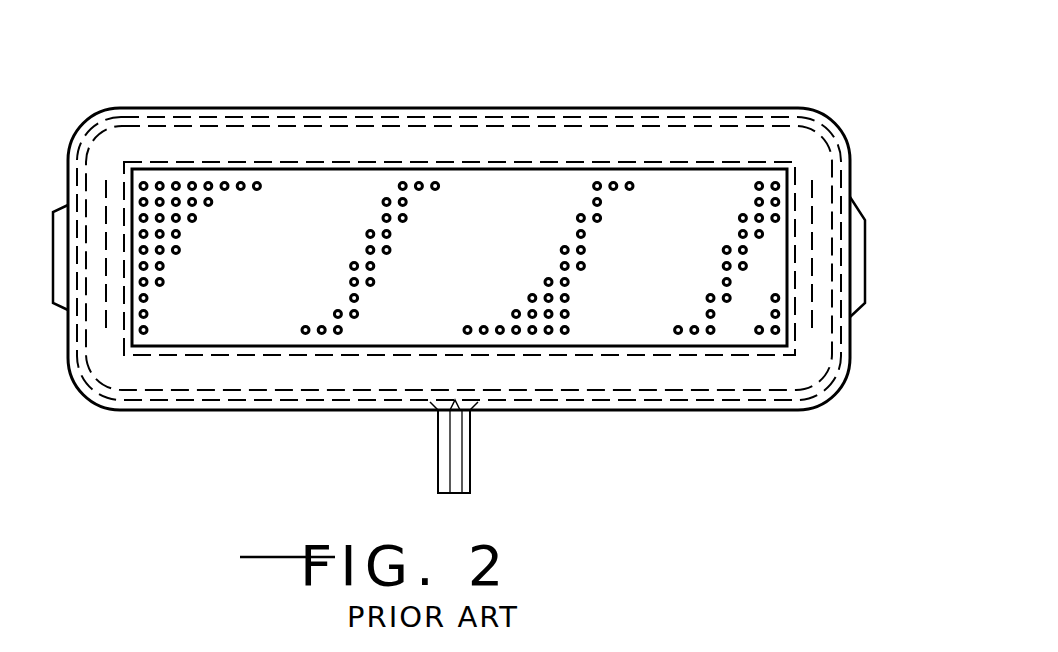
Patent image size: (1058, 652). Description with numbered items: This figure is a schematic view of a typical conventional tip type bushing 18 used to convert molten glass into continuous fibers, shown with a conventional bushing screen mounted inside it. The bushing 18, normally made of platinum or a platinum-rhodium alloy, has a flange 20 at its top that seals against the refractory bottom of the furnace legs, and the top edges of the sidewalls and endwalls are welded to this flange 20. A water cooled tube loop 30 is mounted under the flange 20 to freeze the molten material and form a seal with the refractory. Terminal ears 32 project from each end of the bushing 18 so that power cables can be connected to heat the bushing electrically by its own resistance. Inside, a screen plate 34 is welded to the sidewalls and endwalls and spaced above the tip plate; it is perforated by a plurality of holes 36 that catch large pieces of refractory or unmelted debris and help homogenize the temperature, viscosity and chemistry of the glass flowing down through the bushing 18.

The bushing 18 is at (755, 104).
The flange 20 is at (798, 377).
The water cooled tube loop 30 is at (456, 108).
The terminal ears 32 is at (60, 267).
The screen plate 34 is at (528, 197).
The holes 36 is at (176, 185).